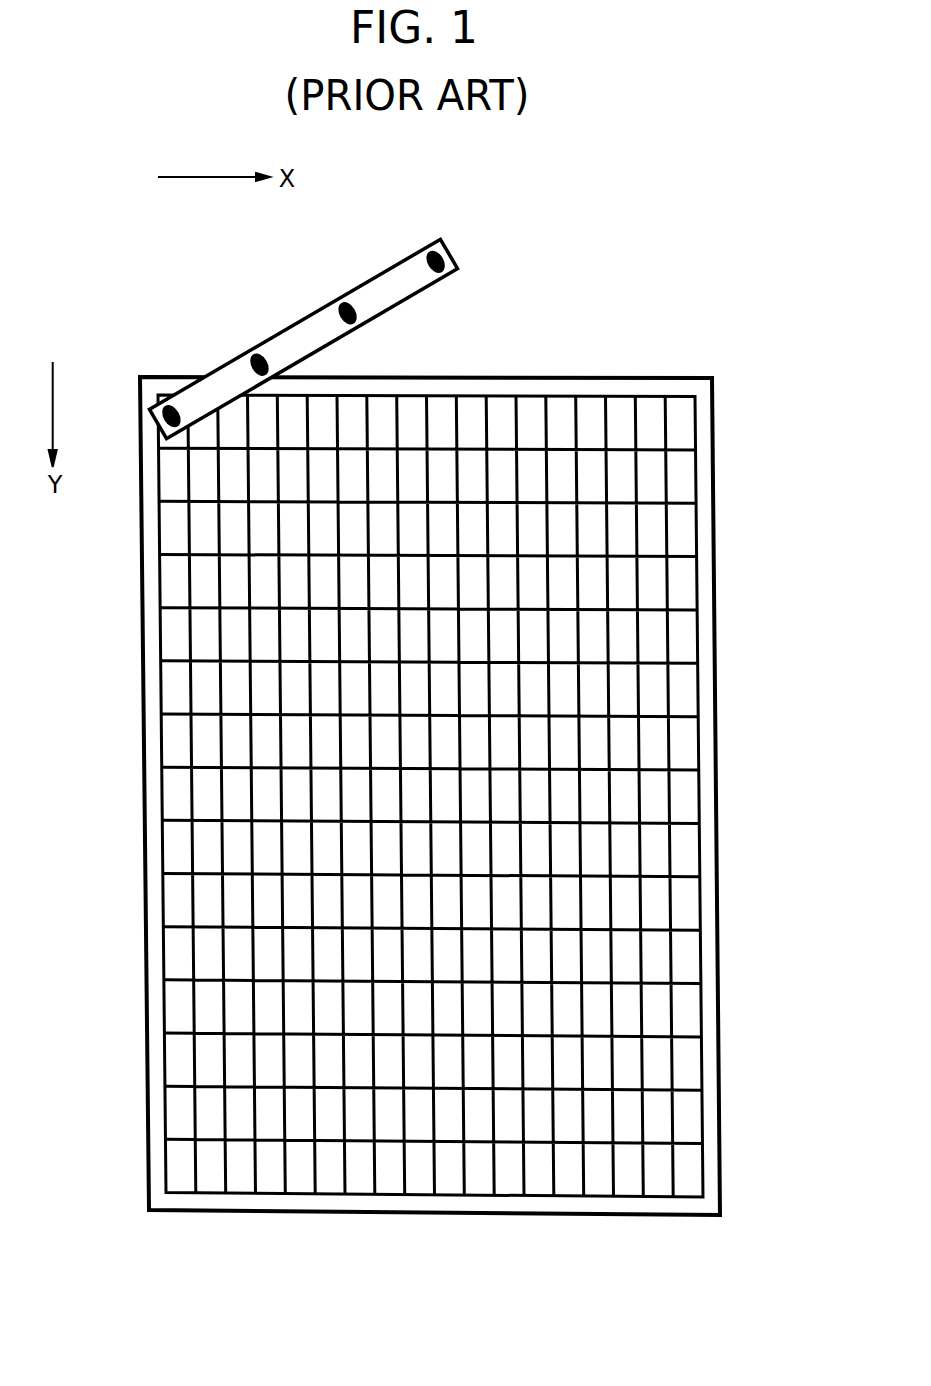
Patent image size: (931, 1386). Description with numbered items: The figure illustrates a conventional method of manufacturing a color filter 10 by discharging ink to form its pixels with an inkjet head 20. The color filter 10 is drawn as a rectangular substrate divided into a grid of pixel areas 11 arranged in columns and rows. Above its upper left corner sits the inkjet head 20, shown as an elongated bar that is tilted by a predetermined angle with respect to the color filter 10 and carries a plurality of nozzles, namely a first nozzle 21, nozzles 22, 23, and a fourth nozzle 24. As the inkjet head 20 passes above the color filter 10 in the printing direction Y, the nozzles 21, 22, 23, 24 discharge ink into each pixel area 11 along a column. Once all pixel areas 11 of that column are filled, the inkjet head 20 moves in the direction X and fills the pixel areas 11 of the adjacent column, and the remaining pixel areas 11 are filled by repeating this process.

The color filter 10 is at (705, 487).
The pixel area 11 is at (175, 742).
The inkjet head 20 is at (458, 258).
The first nozzle 21 is at (165, 397).
The nozzle 22 is at (257, 357).
The nozzle 23 is at (343, 297).
The fourth nozzle 24 is at (430, 245).